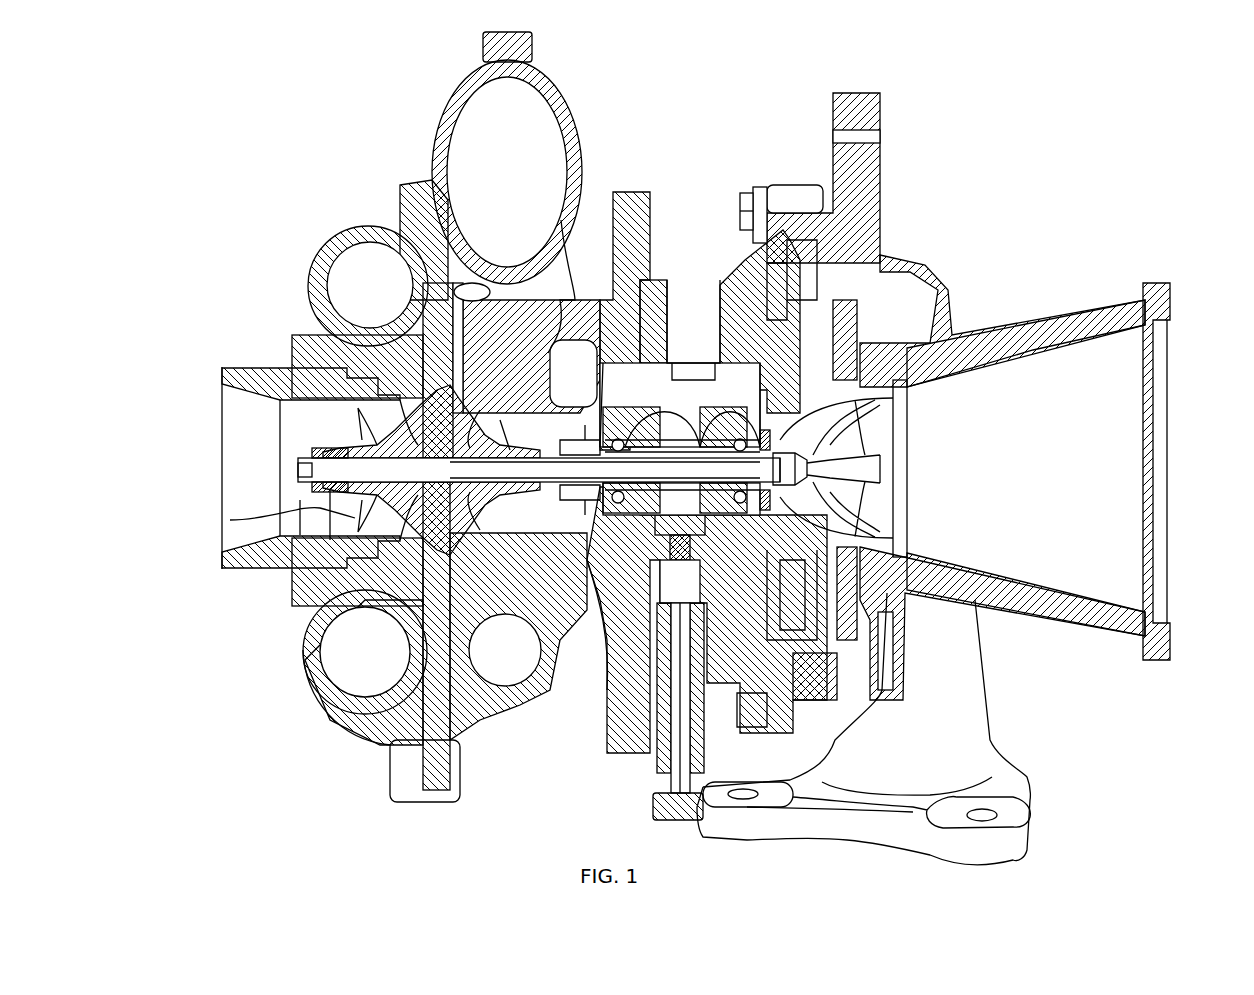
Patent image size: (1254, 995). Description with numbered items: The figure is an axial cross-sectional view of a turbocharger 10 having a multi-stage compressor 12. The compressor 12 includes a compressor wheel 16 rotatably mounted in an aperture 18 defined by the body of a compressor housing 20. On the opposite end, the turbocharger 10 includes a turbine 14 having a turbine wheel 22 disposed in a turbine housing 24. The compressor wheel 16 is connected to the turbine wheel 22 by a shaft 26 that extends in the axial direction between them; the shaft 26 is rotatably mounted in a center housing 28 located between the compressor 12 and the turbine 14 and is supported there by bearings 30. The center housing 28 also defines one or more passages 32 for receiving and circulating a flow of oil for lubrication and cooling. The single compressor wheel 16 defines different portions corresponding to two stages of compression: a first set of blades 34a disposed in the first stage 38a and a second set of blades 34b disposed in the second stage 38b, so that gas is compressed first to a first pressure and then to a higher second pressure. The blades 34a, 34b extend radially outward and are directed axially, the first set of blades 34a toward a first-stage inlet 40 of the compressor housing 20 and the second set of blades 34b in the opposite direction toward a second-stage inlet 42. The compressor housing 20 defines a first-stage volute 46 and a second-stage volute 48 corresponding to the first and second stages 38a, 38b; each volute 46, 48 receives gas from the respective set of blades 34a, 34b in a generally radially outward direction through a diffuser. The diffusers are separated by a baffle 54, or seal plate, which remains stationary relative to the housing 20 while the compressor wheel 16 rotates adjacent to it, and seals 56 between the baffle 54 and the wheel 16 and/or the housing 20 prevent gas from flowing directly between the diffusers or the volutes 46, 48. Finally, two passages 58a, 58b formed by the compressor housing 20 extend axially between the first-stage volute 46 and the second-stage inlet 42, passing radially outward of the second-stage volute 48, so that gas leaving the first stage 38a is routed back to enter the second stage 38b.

The turbocharger 10 is at (656, 448).
The multi-stage compressor 12 is at (435, 417).
The turbine 14 is at (880, 290).
The compressor wheel 16 is at (367, 443).
The aperture 18 is at (297, 590).
The compressor housing 20 is at (313, 350).
The turbine wheel 22 is at (853, 443).
The turbine housing 24 is at (1060, 340).
The shaft 26 is at (510, 480).
The center housing 28 is at (740, 287).
The bearings 30 is at (712, 447).
The passages 32 is at (688, 343).
The first set of blades 34a is at (355, 508).
The second set of blades 34b is at (470, 485).
The first stage 38a is at (378, 270).
The second stage 38b is at (498, 283).
The first-stage inlet 40 is at (266, 462).
The second-stage inlet 42 is at (538, 432).
The first-stage volute 46 is at (340, 275).
The second-stage volute 48 is at (560, 680).
The baffle 54 is at (510, 637).
The seals 56 is at (430, 680).
The first passage 58a is at (573, 617).
The second passage 58b is at (578, 280).